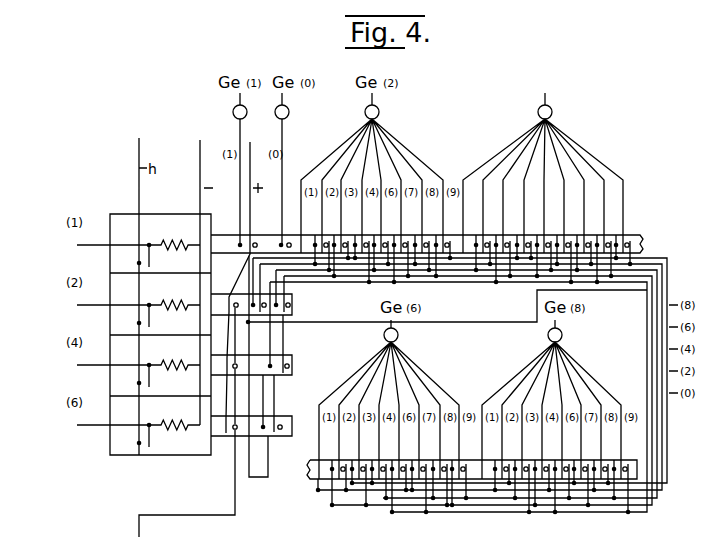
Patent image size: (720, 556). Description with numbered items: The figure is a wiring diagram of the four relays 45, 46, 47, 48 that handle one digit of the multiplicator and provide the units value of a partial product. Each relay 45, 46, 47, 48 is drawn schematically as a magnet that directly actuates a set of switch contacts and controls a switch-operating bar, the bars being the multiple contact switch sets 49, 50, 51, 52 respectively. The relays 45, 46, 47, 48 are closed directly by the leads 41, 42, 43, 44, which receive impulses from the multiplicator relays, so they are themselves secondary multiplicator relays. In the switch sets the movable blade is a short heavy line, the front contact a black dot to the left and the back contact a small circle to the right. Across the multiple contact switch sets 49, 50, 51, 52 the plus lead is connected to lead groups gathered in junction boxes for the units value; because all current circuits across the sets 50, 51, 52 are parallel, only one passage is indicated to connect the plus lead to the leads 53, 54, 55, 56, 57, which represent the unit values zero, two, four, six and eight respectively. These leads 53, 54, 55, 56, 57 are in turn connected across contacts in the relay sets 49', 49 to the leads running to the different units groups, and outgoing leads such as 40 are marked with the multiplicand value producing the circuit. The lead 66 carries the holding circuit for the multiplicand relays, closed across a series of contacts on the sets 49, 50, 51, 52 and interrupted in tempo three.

The outgoing lead 40 is at (594, 152).
The lead 41 is at (77, 245).
The lead 42 is at (77, 305).
The lead 43 is at (77, 365).
The lead 44 is at (77, 425).
The relay 45 is at (118, 261).
The relay 46 is at (118, 321).
The relay 47 is at (118, 381).
The relay 48 is at (118, 441).
The multiple contact switch set 49 is at (503, 469).
The relay contact set 49' is at (439, 234).
The multiple contact switch set 50 is at (292, 304).
The multiple contact switch set 51 is at (292, 366).
The multiple contact switch set 52 is at (292, 427).
The lead 53 is at (605, 293).
The lead 54 is at (634, 285).
The lead 55 is at (656, 333).
The lead 56 is at (660, 354).
The lead 57 is at (666, 395).
The holding circuit lead 66 is at (139, 525).